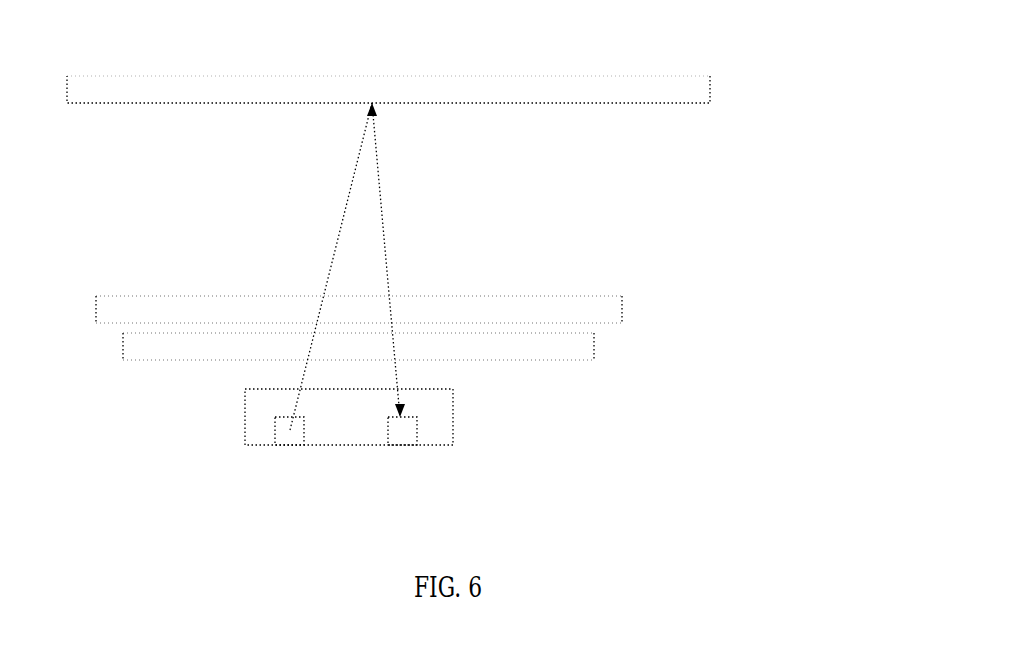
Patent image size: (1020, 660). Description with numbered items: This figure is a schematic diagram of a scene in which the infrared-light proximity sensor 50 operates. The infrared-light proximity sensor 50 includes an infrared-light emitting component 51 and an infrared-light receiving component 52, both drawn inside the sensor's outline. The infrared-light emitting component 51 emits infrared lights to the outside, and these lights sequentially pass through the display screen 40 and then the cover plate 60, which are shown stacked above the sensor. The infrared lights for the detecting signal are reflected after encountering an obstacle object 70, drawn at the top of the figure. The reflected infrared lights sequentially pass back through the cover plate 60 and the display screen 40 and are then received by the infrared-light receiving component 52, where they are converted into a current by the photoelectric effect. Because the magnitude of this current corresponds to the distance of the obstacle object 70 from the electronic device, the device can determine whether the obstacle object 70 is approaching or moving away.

The obstacle object 70 is at (710, 90).
The cover plate 60 is at (622, 308).
The display screen 40 is at (594, 347).
The infrared-light proximity sensor 50 is at (453, 416).
The infrared-light emitting component 51 is at (290, 430).
The infrared-light receiving component 52 is at (402, 430).